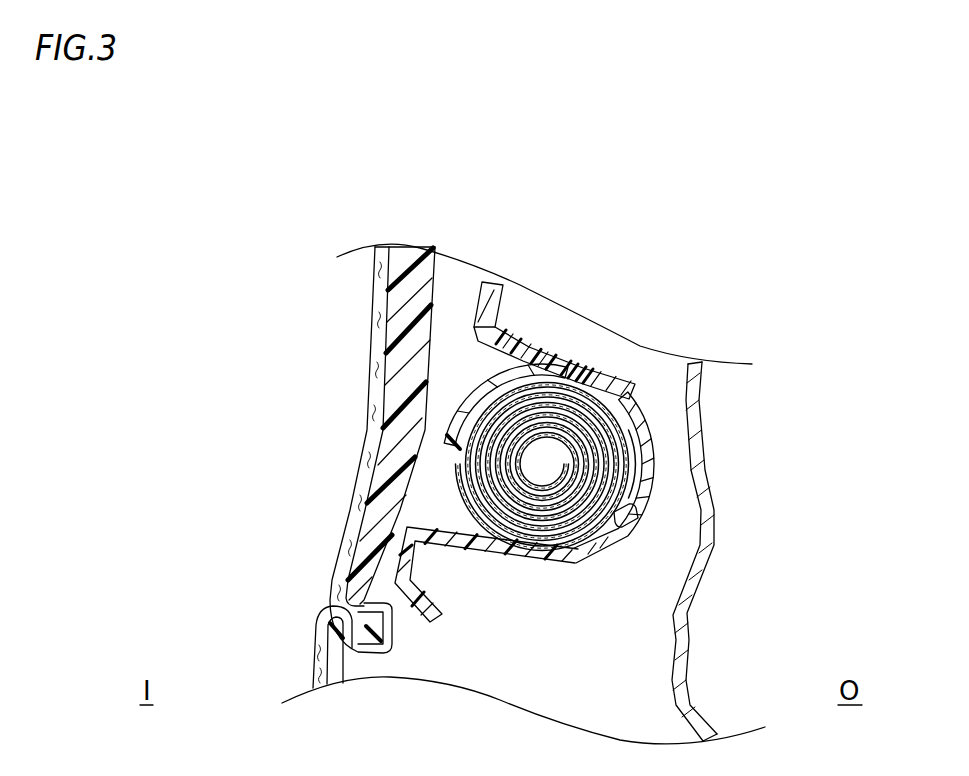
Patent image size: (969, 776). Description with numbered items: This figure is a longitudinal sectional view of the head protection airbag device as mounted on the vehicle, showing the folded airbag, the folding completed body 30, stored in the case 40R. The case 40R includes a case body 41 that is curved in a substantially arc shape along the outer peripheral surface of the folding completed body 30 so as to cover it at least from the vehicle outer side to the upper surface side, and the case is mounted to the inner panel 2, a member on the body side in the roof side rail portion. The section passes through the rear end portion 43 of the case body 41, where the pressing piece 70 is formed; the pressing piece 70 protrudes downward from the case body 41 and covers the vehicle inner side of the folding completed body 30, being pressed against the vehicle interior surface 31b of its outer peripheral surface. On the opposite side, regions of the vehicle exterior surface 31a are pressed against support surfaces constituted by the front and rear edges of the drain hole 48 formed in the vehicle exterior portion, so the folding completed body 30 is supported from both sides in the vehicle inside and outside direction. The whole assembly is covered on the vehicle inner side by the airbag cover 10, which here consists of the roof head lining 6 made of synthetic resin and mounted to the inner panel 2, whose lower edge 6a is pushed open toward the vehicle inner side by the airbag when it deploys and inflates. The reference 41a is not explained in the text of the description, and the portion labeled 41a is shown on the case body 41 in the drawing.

The inner panel 2 is at (700, 486).
The roof head lining 6 is at (378, 457).
The lower edge of roof head lining 6a is at (271, 647).
The airbag cover 10 is at (345, 626).
The folding completed body 30 is at (474, 533).
The vehicle exterior surface 31a is at (622, 437).
The vehicle interior surface 31b is at (455, 465).
The case 40R is at (650, 352).
The case body 41 is at (564, 445).
The bracket fixing portion 41a is at (567, 358).
The rear end portion 43 is at (554, 296).
The drain hole 48 is at (634, 514).
The pressing piece 70 is at (470, 393).